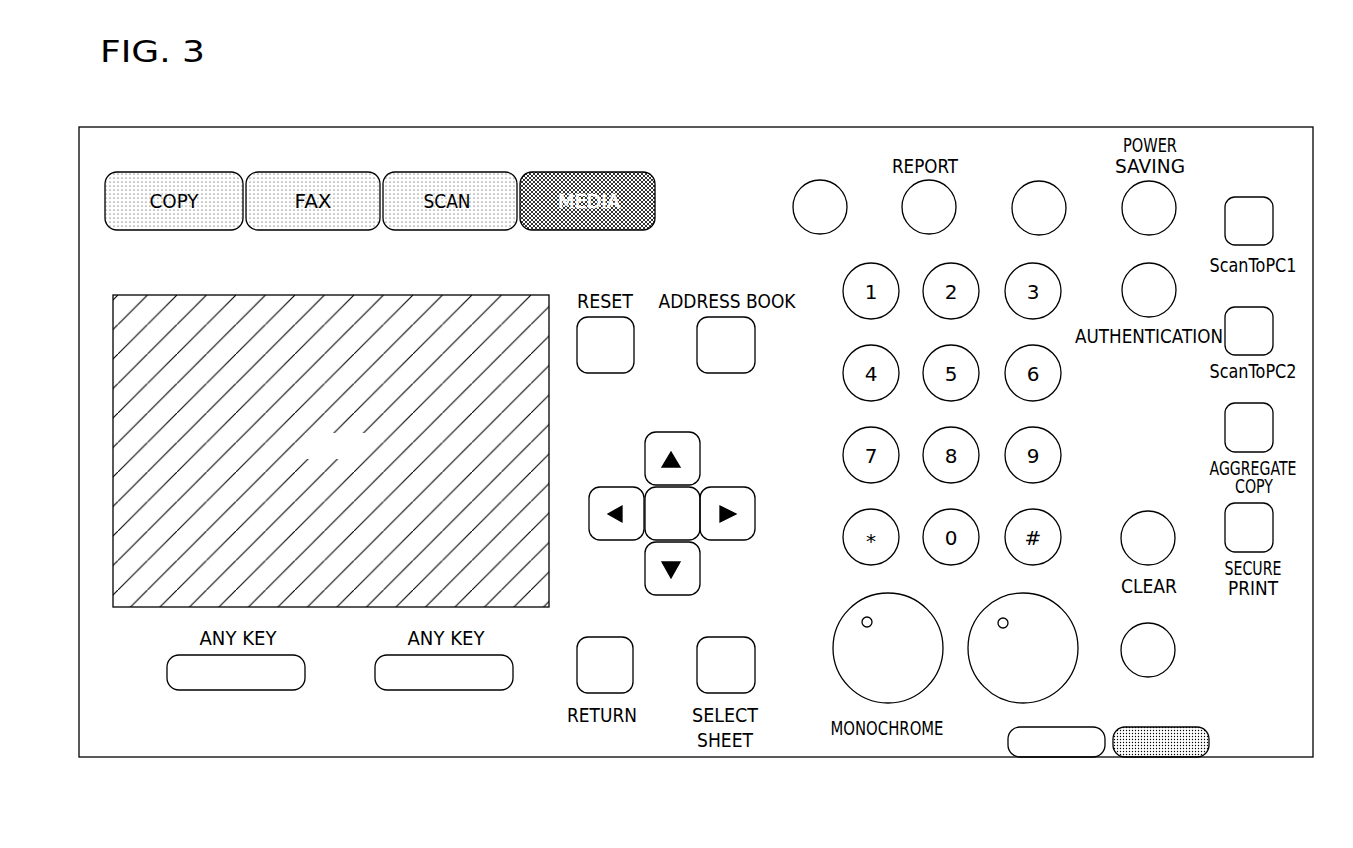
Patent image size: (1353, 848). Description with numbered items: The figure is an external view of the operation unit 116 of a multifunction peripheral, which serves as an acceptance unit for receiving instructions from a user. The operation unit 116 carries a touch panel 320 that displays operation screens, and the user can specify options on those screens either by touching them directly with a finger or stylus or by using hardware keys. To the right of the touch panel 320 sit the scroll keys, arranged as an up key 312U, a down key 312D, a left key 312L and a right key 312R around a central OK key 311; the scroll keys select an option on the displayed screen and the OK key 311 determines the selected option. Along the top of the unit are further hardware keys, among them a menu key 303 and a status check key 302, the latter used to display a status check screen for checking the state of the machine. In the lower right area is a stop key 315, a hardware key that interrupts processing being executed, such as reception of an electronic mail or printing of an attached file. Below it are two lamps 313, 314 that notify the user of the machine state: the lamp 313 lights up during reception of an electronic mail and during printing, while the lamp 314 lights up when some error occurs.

The operation unit 116 is at (318, 127).
The touch panel 320 is at (203, 295).
The OK key 311 is at (697, 488).
The scroll key 312U is at (672, 432).
The scroll key 312D is at (700, 567).
The scroll key 312L is at (610, 483).
The scroll key 312R is at (757, 507).
The menu key 303 is at (817, 147).
The status check key 302 is at (1038, 128).
The stop key 315 is at (1176, 647).
The lamp 313 is at (1060, 758).
The lamp 314 is at (1168, 758).